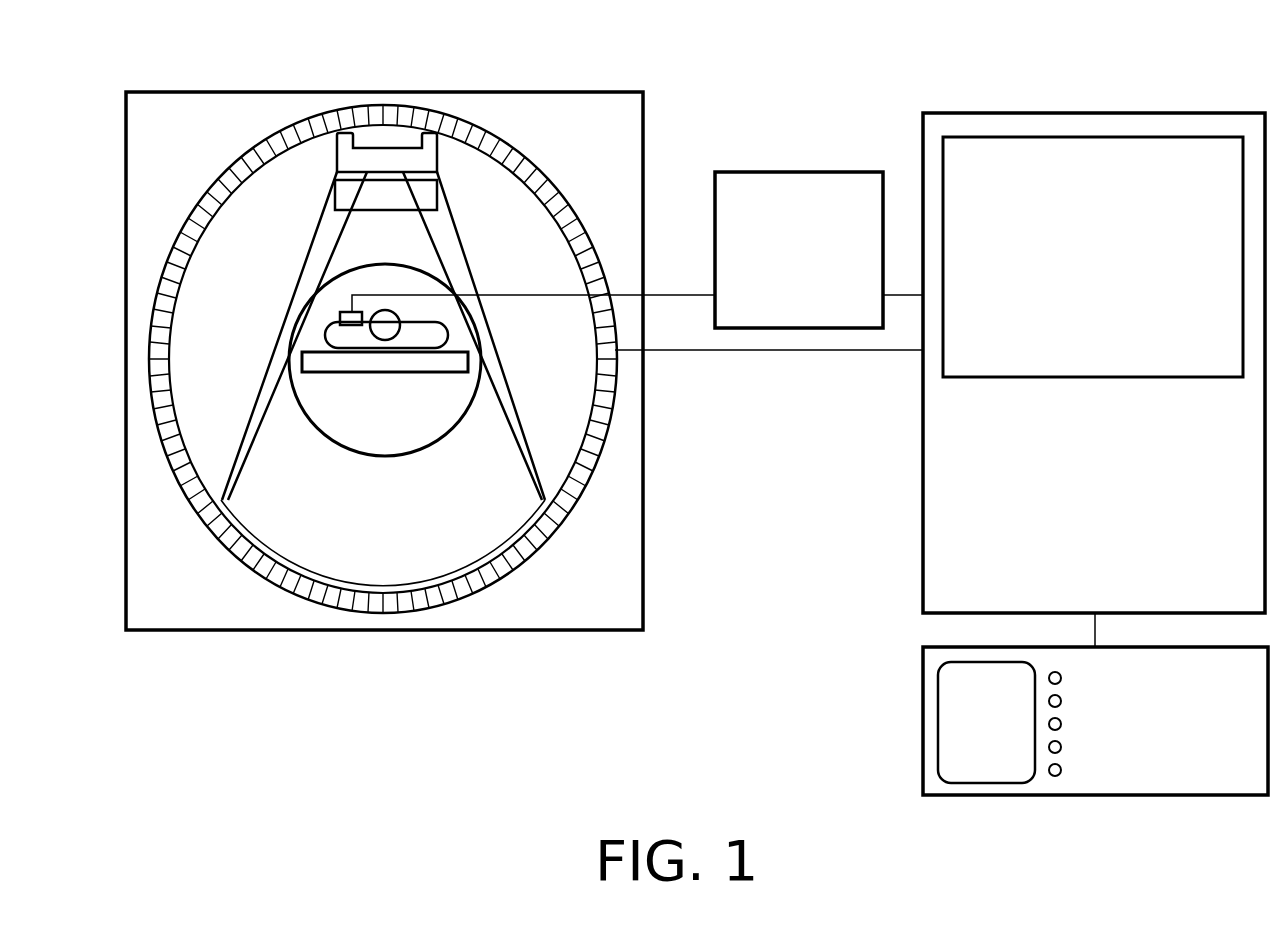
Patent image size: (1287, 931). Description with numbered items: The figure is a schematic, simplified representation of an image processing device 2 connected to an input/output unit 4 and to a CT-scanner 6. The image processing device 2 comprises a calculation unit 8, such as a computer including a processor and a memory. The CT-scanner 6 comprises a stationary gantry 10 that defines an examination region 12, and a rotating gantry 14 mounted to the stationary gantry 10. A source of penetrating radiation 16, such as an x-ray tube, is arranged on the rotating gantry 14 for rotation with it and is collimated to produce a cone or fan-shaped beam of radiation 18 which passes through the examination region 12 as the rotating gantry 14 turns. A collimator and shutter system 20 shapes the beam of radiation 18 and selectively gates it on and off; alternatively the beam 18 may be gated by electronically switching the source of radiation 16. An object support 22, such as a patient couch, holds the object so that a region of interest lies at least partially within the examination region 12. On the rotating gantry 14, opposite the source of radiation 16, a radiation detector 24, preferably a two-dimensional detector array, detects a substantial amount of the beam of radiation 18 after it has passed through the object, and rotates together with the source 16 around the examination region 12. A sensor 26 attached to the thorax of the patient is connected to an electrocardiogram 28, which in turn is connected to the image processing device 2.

The image processing device 2 is at (1094, 113).
The input/output unit 4 is at (923, 722).
The CT-scanner 6 is at (370, 688).
The calculation unit 8 is at (1093, 378).
The stationary gantry 10 is at (497, 92).
The examination region 12 is at (355, 458).
The rotating gantry 14 is at (230, 222).
The source of penetrating radiation 16 is at (384, 153).
The beam of radiation 18 is at (455, 263).
The collimator and shutter system 20 is at (437, 198).
The object support 22 is at (402, 364).
The radiation detector 24 is at (405, 590).
The sensor 26 is at (340, 320).
The electrocardiogram 28 is at (800, 172).